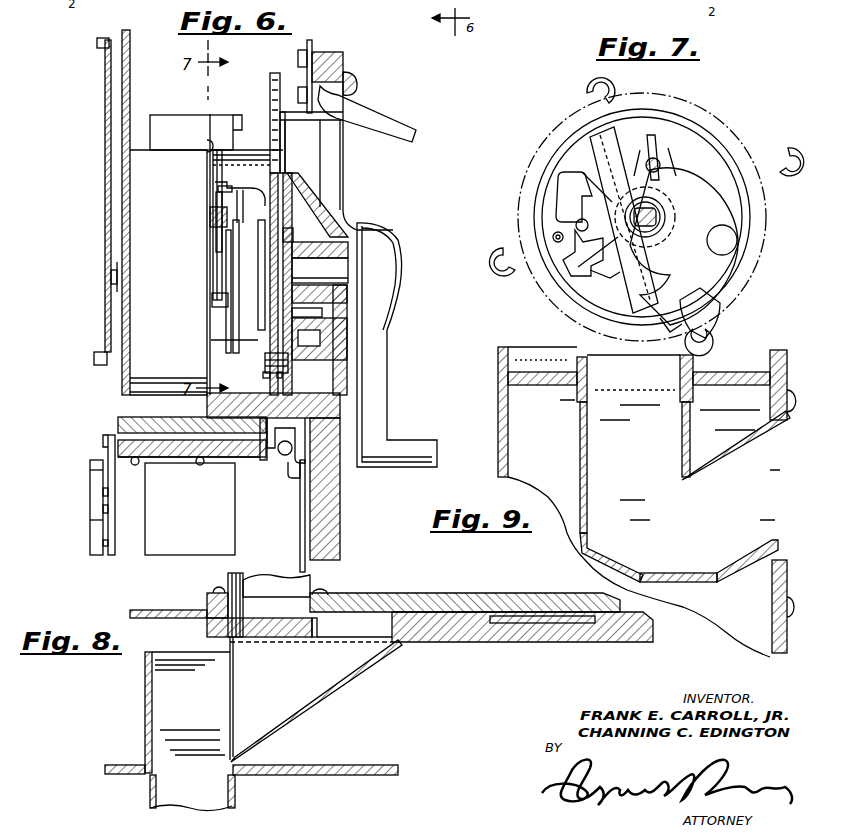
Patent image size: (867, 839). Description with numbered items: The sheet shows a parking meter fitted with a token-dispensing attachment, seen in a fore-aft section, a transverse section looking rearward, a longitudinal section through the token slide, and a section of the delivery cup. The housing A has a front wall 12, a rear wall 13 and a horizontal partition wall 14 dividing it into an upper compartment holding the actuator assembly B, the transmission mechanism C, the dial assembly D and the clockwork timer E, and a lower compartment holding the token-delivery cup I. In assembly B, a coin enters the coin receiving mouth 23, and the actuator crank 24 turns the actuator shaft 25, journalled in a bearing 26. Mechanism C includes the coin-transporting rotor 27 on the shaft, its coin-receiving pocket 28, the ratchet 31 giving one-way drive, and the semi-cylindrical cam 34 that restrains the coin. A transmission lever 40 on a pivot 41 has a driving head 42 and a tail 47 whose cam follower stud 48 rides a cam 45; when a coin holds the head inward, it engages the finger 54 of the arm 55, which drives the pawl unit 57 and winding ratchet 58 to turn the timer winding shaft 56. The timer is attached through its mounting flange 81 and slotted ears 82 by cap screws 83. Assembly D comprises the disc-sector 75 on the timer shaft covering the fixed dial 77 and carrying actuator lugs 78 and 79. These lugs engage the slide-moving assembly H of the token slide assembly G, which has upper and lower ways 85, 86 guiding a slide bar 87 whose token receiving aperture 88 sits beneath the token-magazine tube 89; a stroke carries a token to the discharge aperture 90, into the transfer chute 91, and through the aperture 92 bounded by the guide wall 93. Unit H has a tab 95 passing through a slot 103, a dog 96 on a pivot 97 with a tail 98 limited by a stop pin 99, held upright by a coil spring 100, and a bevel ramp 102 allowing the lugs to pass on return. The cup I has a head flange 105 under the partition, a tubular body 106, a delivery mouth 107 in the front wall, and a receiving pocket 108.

In FIG. 9, the front wall 12 is at (498, 420).
In FIG. 9, the rear wall 13 is at (787, 362).
In FIG. 9, the horizontal partition wall 14 is at (520, 392).
In FIG. 8, the horizontal partition wall 14 is at (368, 764).
In FIG. 6, the coin receiving mouth 23 is at (333, 166).
In FIG. 6, the actuator crank 24 is at (380, 372).
In FIG. 6, the actuator shaft 25 is at (348, 273).
In FIG. 6, the bearing 26 is at (348, 250).
In FIG. 6, the coin-transporting rotor 27 is at (282, 377).
In FIG. 6, the coin-receiving pocket 28 is at (298, 231).
In FIG. 6, the ratchet 31 is at (258, 268).
In FIG. 6, the semi-cylindrical cam 34 is at (213, 334).
In FIG. 6, the transmission lever 40 is at (265, 361).
In FIG. 7, the transmission lever 40 is at (688, 300).
In FIG. 6, the pivot 41 is at (248, 325).
In FIG. 7, the pivot 41 is at (737, 240).
In FIG. 6, the driving head 42 is at (244, 206).
In FIG. 6, the cam 45 is at (319, 340).
In FIG. 6, the tail 47 is at (263, 377).
In FIG. 7, the tail 47 is at (665, 324).
In FIG. 6, the cam follower stud 48 is at (322, 311).
In FIG. 6, the finger 54 is at (222, 186).
In FIG. 7, the finger 54 is at (608, 128).
In FIG. 6, the arm 55 is at (216, 196).
In FIG. 7, the arm 55 is at (606, 156).
In FIG. 6, the timer winding shaft 56 is at (111, 276).
In FIG. 7, the timer winding shaft 56 is at (626, 219).
In FIG. 6, the pawl unit 57 is at (226, 313).
In FIG. 7, the pawl unit 57 is at (600, 272).
In FIG. 6, the winding ratchet 58 is at (212, 298).
In FIG. 7, the winding ratchet 58 is at (618, 296).
In FIG. 6, the disc-sector 75 is at (105, 147).
In FIG. 6, the fixed dial 77 is at (130, 66).
In FIG. 6, the actuator lug 78 is at (94, 358).
In FIG. 6, the actuator lug 79 is at (97, 42).
In FIG. 6, the mounting flange 81 is at (213, 238).
In FIG. 7, the mounting flange 81 is at (722, 118).
In FIG. 6, the slotted ears 82 is at (233, 124).
In FIG. 7, the slotted ears 82 is at (776, 170).
In FIG. 6, the cap screws 83 is at (207, 146).
In FIG. 6, the upper way 85 is at (124, 418).
In FIG. 8, the upper way 85 is at (438, 594).
In FIG. 6, the lower way 86 is at (226, 459).
In FIG. 8, the lower way 86 is at (542, 640).
In FIG. 6, the slide bar 87 is at (182, 459).
In FIG. 8, the slide bar 87 is at (166, 604).
In FIG. 8, the token receiving aperture 88 is at (290, 614).
In FIG. 6, the token-magazine tube 89 is at (168, 124).
In FIG. 8, the token-magazine tube 89 is at (228, 574).
In FIG. 8, the discharge aperture 90 is at (360, 641).
In FIG. 6, the transfer chute 91 is at (190, 509).
In FIG. 8, the transfer chute 91 is at (326, 696).
In FIG. 7, the aperture 92 is at (518, 245).
In FIG. 9, the aperture 92 is at (640, 378).
In FIG. 8, the aperture 92 is at (198, 764).
In FIG. 9, the guide wall 93 is at (577, 360).
In FIG. 8, the guide wall 93 is at (145, 680).
In FIG. 6, the tab 95 is at (115, 532).
In FIG. 6, the dog 96 is at (90, 476).
In FIG. 6, the pivot 97 is at (103, 492).
In FIG. 6, the tail 98 is at (90, 521).
In FIG. 6, the stop pin 99 is at (108, 510).
In FIG. 6, the coil spring 100 is at (103, 543).
In FIG. 6, the bevel ramp 102 is at (92, 462).
In FIG. 8, the slot 103 is at (542, 601).
In FIG. 9, the head flange 105 is at (580, 425).
In FIG. 8, the head flange 105 is at (150, 800).
In FIG. 9, the tubular body 106 is at (612, 562).
In FIG. 9, the delivery mouth 107 is at (780, 546).
In FIG. 9, the receiving pocket 108 is at (701, 573).
In FIG. 9, the housing A is at (494, 386).
In FIG. 6, the actuator crank assembly B is at (412, 270).
In FIG. 6, the transmission mechanism C is at (220, 148).
In FIG. 7, the transmission mechanism C is at (550, 162).
In FIG. 6, the indicator dial assembly D is at (102, 215).
In FIG. 6, the clockwork timer unit E is at (170, 254).
In FIG. 6, the token slide assembly G is at (104, 424).
In FIG. 8, the token slide assembly G is at (200, 602).
In FIG. 6, the slide-moving assembly H is at (96, 554).
In FIG. 9, the token-delivery cup I is at (576, 466).
In FIG. 8, the token-delivery cup I is at (240, 800).